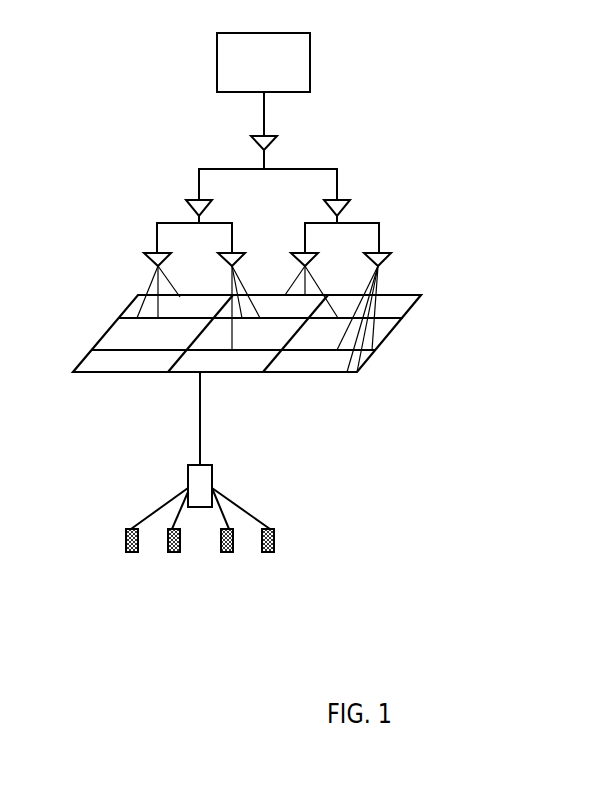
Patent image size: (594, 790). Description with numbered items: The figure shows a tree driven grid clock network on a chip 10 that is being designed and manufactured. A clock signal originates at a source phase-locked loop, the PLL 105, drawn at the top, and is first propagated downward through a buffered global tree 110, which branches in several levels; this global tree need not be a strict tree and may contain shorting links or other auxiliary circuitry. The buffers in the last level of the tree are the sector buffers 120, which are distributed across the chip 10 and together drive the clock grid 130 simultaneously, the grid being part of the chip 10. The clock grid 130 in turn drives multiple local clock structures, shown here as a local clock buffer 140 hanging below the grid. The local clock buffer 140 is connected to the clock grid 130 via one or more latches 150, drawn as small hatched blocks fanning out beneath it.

The chip 10 is at (88, 348).
The source phase-locked loop (PLL) 105 is at (218, 68).
The buffered global tree 110 is at (348, 160).
The sector buffers 120 is at (405, 247).
The clock grid 130 is at (305, 333).
The local clock buffers 140 is at (212, 470).
The latches 150 is at (272, 548).